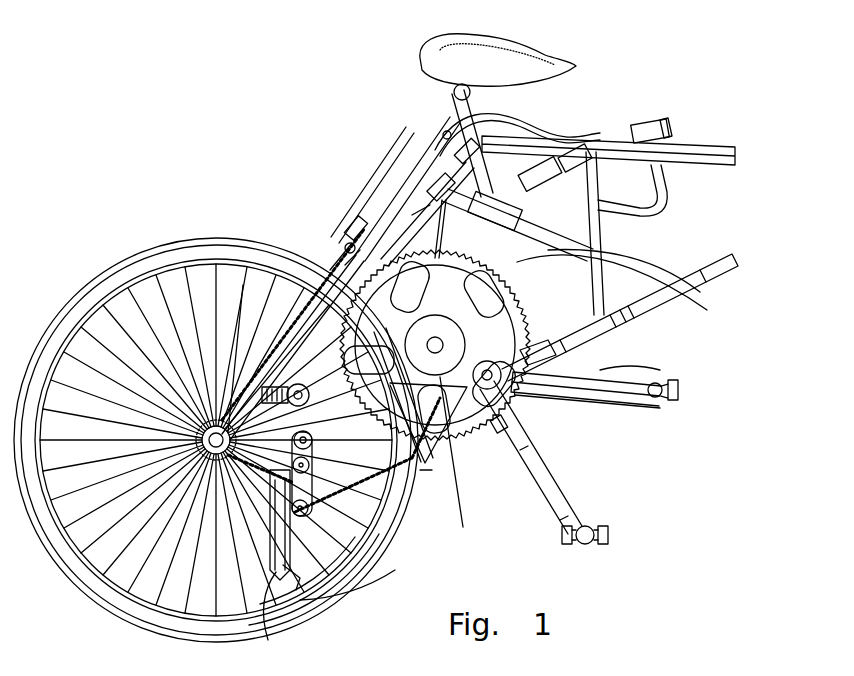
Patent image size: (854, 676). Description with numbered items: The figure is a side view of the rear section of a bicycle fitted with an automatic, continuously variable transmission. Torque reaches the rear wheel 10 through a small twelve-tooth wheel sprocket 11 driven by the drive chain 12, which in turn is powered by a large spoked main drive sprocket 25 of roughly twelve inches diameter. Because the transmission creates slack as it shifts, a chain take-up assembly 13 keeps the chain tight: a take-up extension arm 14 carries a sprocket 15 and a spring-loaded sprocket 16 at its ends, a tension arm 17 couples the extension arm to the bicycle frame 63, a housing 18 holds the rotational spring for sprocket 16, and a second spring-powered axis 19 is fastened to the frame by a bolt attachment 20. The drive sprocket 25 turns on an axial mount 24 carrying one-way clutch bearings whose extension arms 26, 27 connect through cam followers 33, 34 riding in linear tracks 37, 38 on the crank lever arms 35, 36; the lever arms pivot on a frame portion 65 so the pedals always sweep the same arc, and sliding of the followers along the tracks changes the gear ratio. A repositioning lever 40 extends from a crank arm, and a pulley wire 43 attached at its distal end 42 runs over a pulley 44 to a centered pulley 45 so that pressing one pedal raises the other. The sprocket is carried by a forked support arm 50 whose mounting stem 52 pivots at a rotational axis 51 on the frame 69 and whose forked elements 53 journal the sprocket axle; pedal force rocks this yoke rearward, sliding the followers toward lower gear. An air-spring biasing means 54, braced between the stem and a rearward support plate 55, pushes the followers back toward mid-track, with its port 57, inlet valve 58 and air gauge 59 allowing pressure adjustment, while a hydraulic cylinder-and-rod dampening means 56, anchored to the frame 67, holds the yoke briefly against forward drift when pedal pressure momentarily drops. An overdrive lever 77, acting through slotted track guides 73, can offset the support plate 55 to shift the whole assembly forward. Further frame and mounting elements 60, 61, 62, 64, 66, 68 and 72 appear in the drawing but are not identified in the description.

The rear wheel 10 is at (250, 247).
The wheel sprocket 11 is at (167, 483).
The drive chain 12 is at (388, 542).
The chain take-up assembly 13 is at (266, 612).
The take-up extension arm 14 is at (333, 572).
The sprocket 15 is at (293, 570).
The sprocket 16 is at (268, 485).
The tension arm 17 is at (407, 502).
The spring housing 18 is at (372, 566).
The second spring-powered axis 19 is at (314, 472).
The bolt attachment 20 is at (313, 446).
The axial mount 24 is at (452, 425).
The main drive sprocket 25 is at (593, 333).
The extension arm 26 is at (533, 440).
The extension arm 27 is at (550, 400).
The cam follower 33 is at (493, 432).
The cam follower 34 is at (647, 383).
The crank lever arm 35 is at (573, 513).
The crank lever arm 36 is at (660, 397).
The linear track 37 is at (657, 367).
The linear track 38 is at (546, 492).
The repositioning lever 40 is at (632, 318).
The distal end 42 is at (513, 263).
The pulley wire 43 is at (350, 243).
The pulley 44 is at (243, 285).
The centered pulley 45 is at (360, 223).
The support arm 50 is at (590, 260).
The rotational axis 51 is at (590, 160).
The mounting stem 52 is at (662, 181).
The forked elements 53 is at (533, 180).
The biasing means 54 is at (567, 157).
The rearward support plate 55 is at (513, 175).
The dampening means 56 is at (442, 190).
The port 57 is at (688, 290).
The inlet valve 58 is at (595, 207).
The air gauge 59 is at (672, 132).
The frame tube 60 is at (405, 207).
The frame tube 61 is at (432, 195).
The chain 62 is at (308, 290).
The bicycle frame 63 is at (180, 275).
The rod 64 is at (463, 527).
The frame portion 65 is at (543, 347).
The frame tube 66 is at (718, 270).
The bicycle frame 67 is at (430, 205).
The clamp 68 is at (600, 157).
The frame 69 is at (735, 148).
The seat 72 is at (500, 78).
The slotted track guides 73 is at (467, 153).
The lever 77 is at (435, 345).